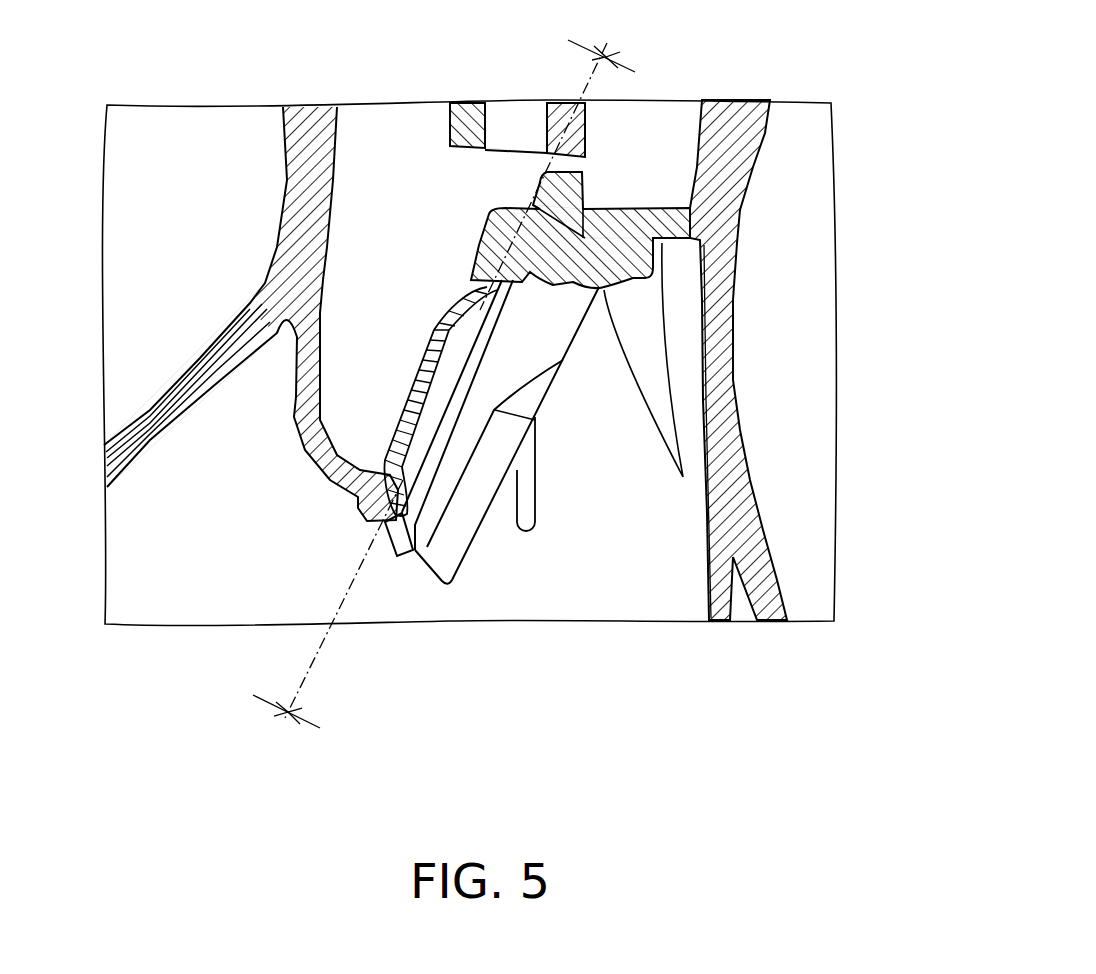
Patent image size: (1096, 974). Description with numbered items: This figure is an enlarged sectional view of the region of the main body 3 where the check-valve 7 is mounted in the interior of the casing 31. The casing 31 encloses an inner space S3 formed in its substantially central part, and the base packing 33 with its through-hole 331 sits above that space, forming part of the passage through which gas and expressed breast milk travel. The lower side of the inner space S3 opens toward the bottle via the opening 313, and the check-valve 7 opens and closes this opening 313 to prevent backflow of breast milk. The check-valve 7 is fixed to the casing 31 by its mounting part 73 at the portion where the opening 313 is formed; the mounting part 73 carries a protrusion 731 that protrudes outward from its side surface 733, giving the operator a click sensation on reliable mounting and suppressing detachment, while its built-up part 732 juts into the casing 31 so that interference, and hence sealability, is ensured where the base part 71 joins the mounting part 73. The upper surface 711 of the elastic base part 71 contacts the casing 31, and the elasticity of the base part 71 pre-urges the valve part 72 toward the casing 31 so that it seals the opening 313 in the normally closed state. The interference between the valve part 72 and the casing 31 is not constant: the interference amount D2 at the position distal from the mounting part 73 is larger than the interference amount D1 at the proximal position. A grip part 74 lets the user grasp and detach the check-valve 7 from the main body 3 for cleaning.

The main body 3 is at (240, 235).
The casing 31 is at (312, 192).
The opening 313 is at (398, 350).
The inner space S3 is at (406, 210).
The base packing 33 is at (467, 116).
The through-hole 331 is at (517, 130).
The check-valve 7 is at (489, 534).
The base part 71 is at (634, 262).
The upper surface 711 is at (624, 228).
The valve part 72 is at (416, 393).
The mounting part 73 is at (584, 181).
The protrusion 731 is at (584, 207).
The built-up part 732 is at (620, 205).
The side surface 733 is at (582, 172).
The grip part 74 is at (460, 537).
The interference amount D1 is at (557, 160).
The interference amount D2 is at (312, 608).